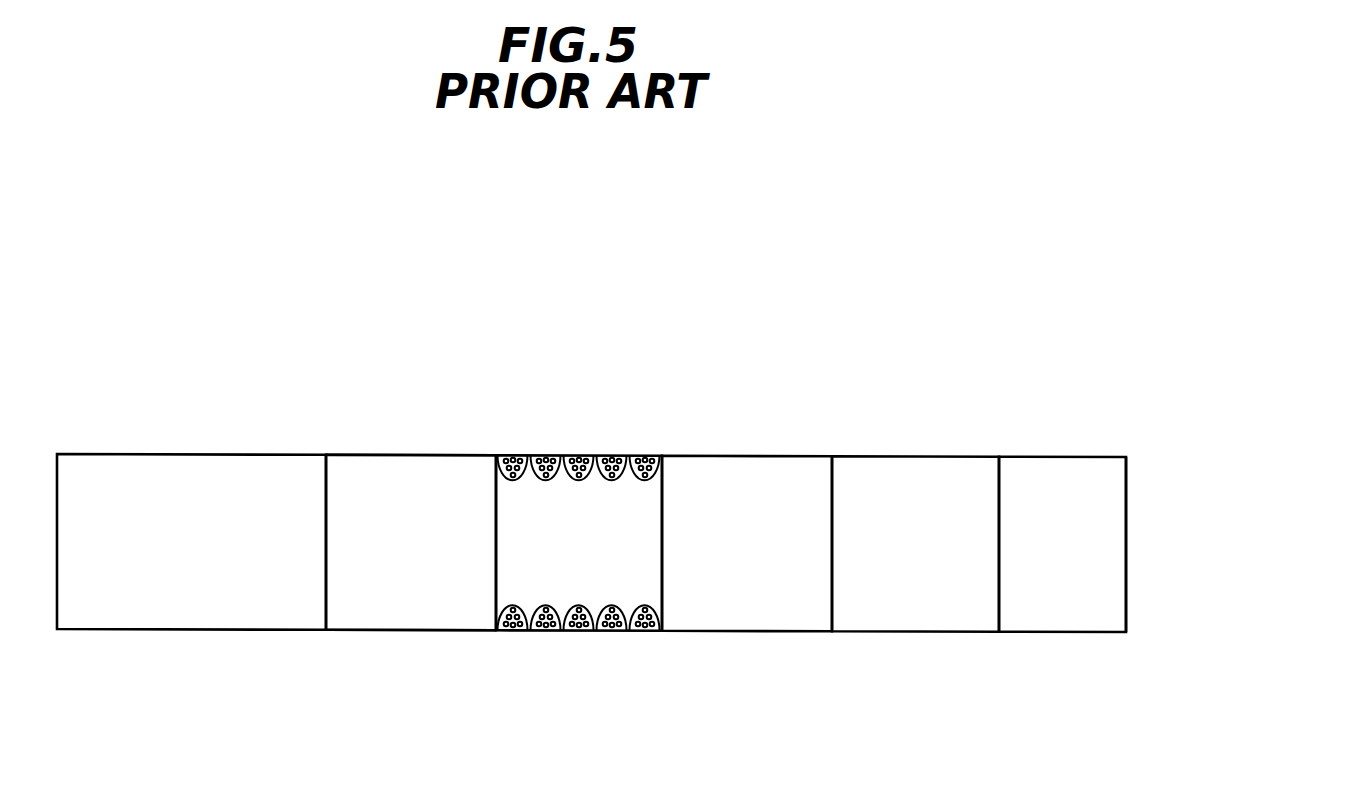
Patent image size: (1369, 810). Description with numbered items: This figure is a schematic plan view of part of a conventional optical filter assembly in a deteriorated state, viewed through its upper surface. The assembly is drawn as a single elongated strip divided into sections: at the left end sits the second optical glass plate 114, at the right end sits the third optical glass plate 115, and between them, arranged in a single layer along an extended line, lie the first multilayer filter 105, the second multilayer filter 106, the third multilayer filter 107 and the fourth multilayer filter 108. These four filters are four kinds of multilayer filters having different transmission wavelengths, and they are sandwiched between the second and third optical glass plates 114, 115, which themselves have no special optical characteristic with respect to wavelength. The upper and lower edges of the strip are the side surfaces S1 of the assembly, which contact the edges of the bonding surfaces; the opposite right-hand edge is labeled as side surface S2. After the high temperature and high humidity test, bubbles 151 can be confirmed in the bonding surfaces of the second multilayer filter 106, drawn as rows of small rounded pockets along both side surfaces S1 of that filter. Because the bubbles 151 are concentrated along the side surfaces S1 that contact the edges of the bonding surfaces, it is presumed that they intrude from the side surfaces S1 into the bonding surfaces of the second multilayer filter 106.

The first multilayer filter 105 is at (437, 495).
The second multilayer filter 106 is at (588, 497).
The third multilayer filter 107 is at (683, 497).
The fourth multilayer filter 108 is at (890, 487).
The second optical glass plate 114 is at (155, 597).
The third optical glass plate 115 is at (1072, 473).
The bubbles 151 is at (620, 630).
The side surfaces S1 is at (393, 720).
The S2 side surface S2 is at (1137, 545).